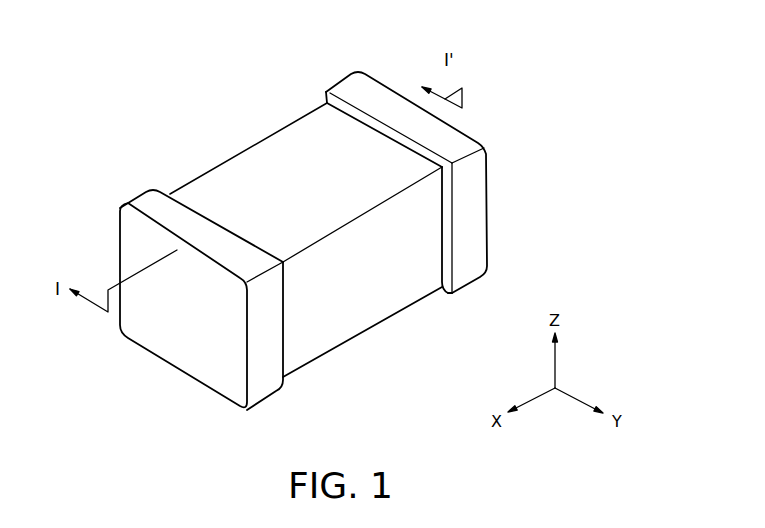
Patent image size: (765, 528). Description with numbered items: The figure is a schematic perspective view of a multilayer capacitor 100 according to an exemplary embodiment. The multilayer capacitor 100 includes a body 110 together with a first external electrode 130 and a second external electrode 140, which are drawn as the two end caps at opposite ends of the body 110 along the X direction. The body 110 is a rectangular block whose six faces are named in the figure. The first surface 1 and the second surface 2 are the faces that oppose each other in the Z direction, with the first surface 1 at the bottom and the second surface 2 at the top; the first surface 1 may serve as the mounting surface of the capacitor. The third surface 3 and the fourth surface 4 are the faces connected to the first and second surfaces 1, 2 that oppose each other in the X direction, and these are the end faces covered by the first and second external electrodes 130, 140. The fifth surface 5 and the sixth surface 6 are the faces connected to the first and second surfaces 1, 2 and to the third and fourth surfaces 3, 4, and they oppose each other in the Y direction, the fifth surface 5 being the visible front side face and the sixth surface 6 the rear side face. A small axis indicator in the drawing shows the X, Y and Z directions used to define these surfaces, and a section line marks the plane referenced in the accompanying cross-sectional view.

The multilayer capacitor 100 is at (150, 28).
The body 110 is at (263, 157).
The first external electrode 130 is at (143, 203).
The second external electrode 140 is at (345, 88).
The first surface 1 is at (358, 337).
The second surface 2 is at (310, 160).
The third surface 3 is at (178, 335).
The fourth surface 4 is at (395, 88).
The fifth surface 5 is at (370, 290).
The sixth surface 6 is at (205, 173).